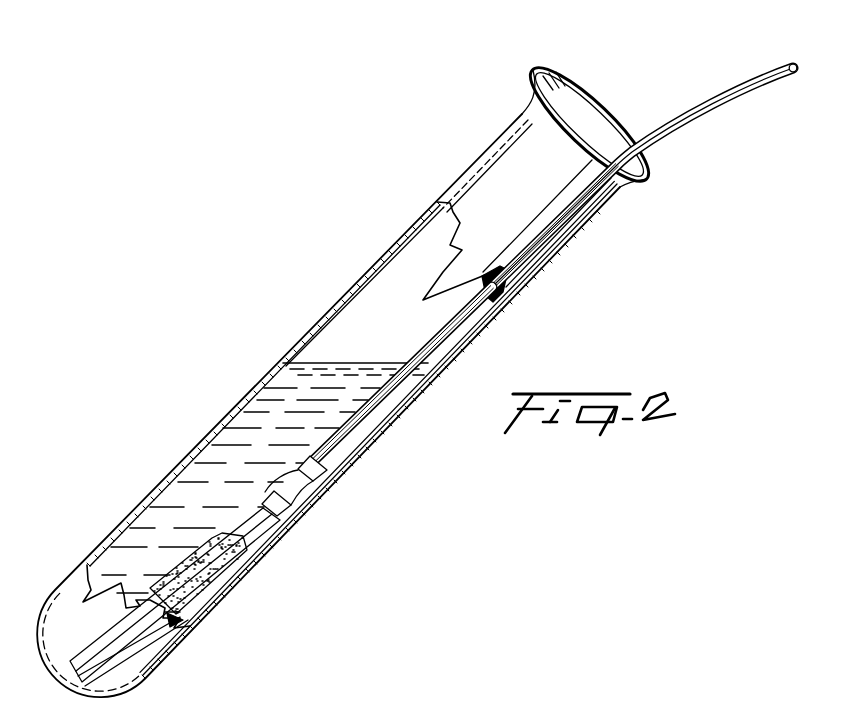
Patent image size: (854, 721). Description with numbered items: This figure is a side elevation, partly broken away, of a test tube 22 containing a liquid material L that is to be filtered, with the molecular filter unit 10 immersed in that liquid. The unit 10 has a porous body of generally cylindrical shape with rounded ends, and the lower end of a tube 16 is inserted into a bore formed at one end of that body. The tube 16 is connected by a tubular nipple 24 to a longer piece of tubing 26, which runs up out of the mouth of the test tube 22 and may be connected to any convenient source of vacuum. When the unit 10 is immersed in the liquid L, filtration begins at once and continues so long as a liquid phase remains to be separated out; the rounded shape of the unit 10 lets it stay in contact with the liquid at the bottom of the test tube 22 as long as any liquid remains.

The molecular filter unit 10 is at (158, 571).
The tube 16 is at (258, 527).
The test tube 22 is at (223, 422).
The tubular nipple 24 is at (300, 492).
The tubing 26 is at (703, 98).
The liquid material L is at (350, 363).